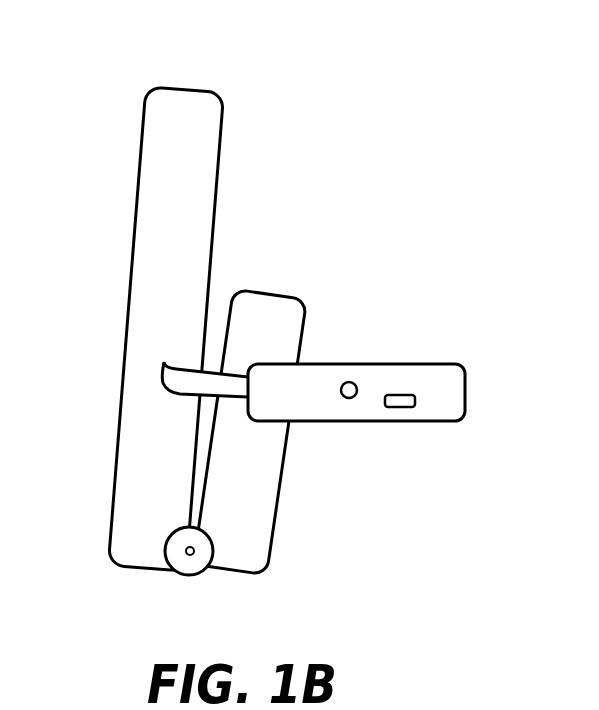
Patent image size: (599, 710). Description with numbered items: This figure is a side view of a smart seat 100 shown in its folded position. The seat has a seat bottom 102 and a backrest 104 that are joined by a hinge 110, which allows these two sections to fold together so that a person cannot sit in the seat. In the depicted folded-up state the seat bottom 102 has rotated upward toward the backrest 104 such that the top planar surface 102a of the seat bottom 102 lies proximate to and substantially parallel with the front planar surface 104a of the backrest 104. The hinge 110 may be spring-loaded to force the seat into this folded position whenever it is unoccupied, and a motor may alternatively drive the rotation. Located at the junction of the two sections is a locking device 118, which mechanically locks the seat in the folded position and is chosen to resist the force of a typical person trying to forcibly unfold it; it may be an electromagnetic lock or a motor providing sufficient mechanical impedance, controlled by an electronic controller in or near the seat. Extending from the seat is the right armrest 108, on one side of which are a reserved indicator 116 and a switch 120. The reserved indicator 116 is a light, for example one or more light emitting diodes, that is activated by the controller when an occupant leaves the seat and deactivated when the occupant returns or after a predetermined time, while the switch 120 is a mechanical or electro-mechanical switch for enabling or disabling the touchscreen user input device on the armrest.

The smart seat 100 is at (430, 116).
The seat bottom 102 is at (278, 512).
The top planar surface of seat bottom 102a is at (215, 293).
The backrest 104 is at (137, 205).
The front planar surface of backrest 104a is at (223, 171).
The second armrest 108 is at (465, 380).
The hinge 110 is at (186, 550).
The reserved indicator 116 is at (353, 382).
The locking device 118 is at (180, 573).
The switch 120 is at (400, 408).